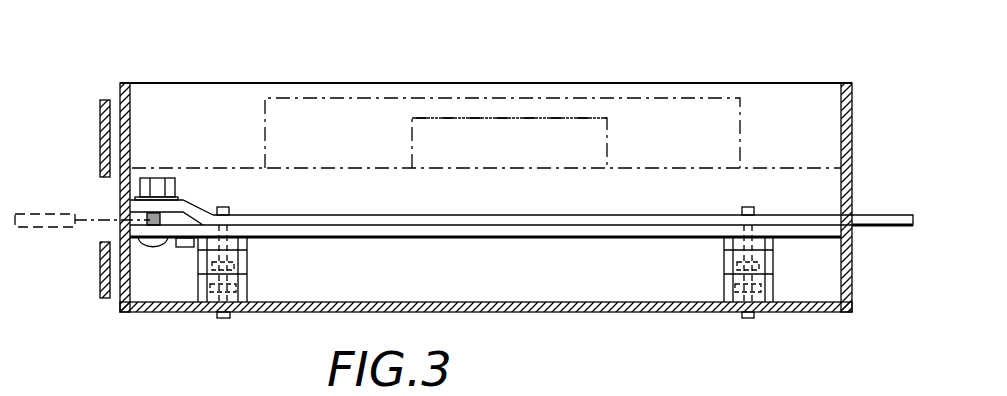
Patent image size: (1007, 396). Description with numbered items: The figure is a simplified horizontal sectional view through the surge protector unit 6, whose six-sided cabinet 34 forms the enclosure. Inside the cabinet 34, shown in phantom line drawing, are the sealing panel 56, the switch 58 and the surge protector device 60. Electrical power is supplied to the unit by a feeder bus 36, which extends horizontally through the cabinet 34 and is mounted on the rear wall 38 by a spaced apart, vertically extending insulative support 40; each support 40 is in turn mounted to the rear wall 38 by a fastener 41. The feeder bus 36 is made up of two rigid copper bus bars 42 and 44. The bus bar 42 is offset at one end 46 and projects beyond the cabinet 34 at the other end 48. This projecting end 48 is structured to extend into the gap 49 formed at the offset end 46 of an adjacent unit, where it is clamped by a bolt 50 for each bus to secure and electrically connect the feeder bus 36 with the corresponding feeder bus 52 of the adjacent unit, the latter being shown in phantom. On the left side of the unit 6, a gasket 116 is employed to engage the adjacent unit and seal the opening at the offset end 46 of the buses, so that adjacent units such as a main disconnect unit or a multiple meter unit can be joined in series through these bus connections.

The surge protector unit 6 is at (288, 64).
The cabinet 34 is at (813, 82).
The feeder bus 36 is at (875, 206).
The rear wall 38 is at (598, 306).
The insulative support 40 is at (248, 260).
The fastener 41 is at (222, 319).
The bus bar 42 is at (540, 215).
The bus bar 44 is at (478, 238).
The offset end 46 is at (98, 197).
The projecting end 48 is at (886, 230).
The gap 49 is at (186, 212).
The bolt 50 is at (160, 178).
The feeder bus of adjacent unit 52 is at (28, 228).
The sealing panel 56 is at (338, 168).
The switch 58 is at (538, 118).
The surge protector device 60 is at (652, 98).
The gasket 116 is at (100, 122).